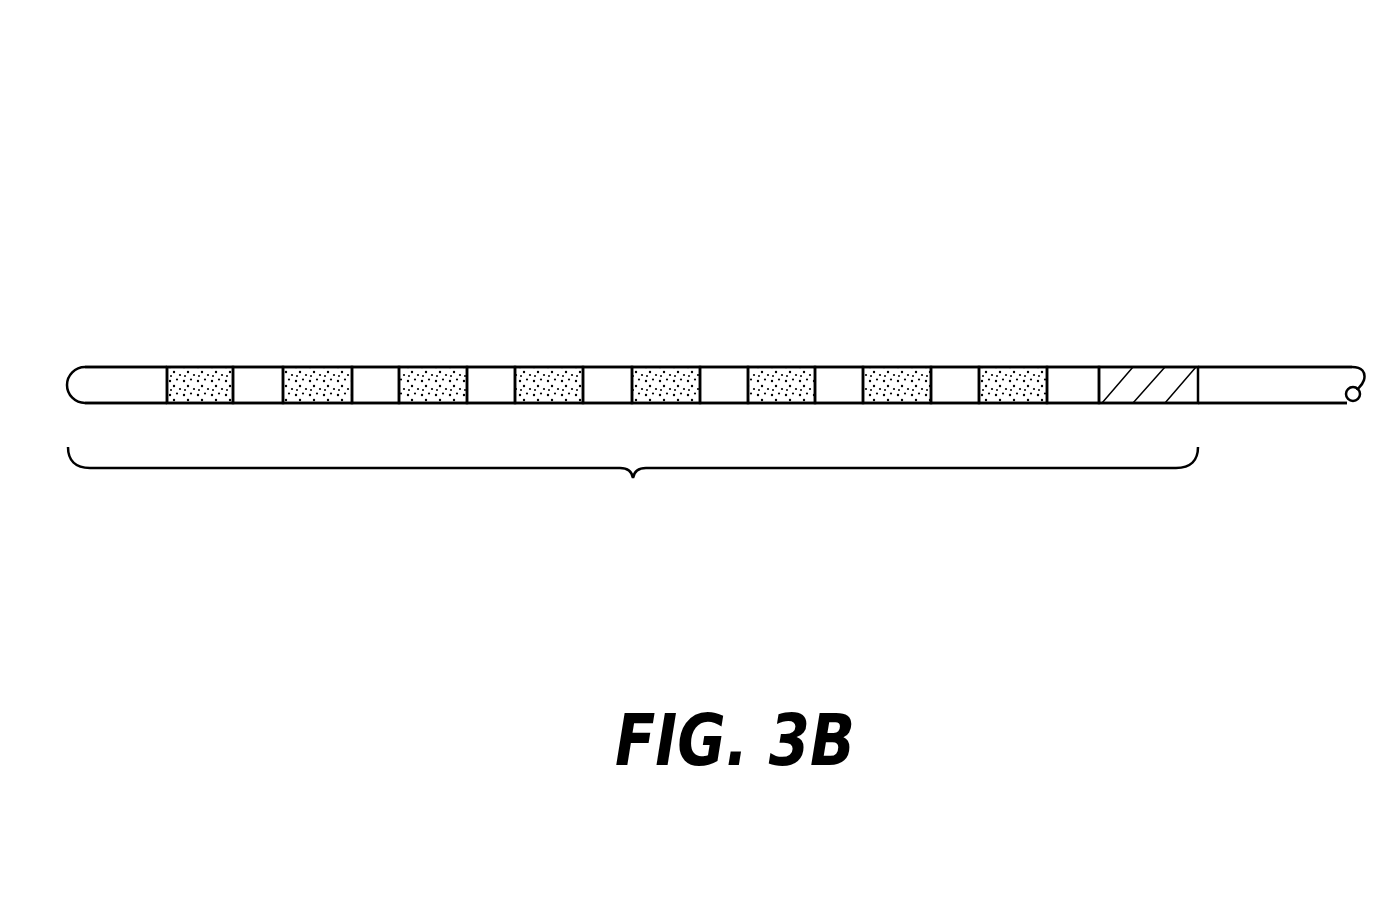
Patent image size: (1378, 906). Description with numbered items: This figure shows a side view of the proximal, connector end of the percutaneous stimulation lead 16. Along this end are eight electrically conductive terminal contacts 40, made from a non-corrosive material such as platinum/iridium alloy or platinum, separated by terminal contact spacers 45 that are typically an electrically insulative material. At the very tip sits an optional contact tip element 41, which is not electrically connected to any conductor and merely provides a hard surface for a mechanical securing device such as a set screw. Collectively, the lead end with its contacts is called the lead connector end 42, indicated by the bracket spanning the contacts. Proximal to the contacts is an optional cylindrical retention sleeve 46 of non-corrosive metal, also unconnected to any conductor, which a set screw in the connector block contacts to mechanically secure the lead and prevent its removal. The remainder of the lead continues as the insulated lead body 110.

The percutaneous stimulation lead 16 is at (1068, 203).
The contact tip element 41 is at (123, 366).
The terminal contacts 40 is at (200, 366).
The terminal contact spacers 45 is at (258, 366).
The retention sleeve 46 is at (1148, 366).
The lead body 110 is at (1270, 404).
The lead connector end 42 is at (633, 478).